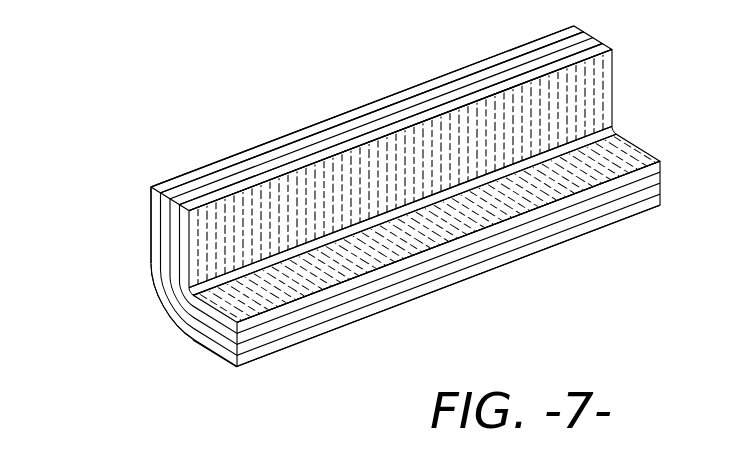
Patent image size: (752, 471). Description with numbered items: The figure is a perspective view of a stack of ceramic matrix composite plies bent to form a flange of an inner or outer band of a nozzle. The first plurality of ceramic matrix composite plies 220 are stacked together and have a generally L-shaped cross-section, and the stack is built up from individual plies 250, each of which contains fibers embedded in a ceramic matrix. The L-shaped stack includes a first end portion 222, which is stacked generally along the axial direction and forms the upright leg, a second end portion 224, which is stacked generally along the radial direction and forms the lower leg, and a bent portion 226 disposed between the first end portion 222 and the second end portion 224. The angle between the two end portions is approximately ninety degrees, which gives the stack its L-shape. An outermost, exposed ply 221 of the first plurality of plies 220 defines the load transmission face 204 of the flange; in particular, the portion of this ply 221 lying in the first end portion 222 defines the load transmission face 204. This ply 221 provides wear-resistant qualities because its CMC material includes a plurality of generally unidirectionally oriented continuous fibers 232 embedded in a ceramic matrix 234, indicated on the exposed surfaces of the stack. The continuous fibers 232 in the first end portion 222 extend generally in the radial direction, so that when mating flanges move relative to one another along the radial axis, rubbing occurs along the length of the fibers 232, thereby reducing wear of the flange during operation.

The first plurality of ceramic matrix composite plies 220 is at (167, 172).
The outermost exposed ply 221 is at (500, 92).
The load transmission face 204 is at (548, 118).
The plies 250 is at (380, 130).
The first end portion 222 is at (140, 236).
The bent portion 226 is at (143, 308).
The second end portion 224 is at (195, 345).
The ceramic matrix 234 is at (400, 257).
The continuous fibers 232 is at (567, 178).